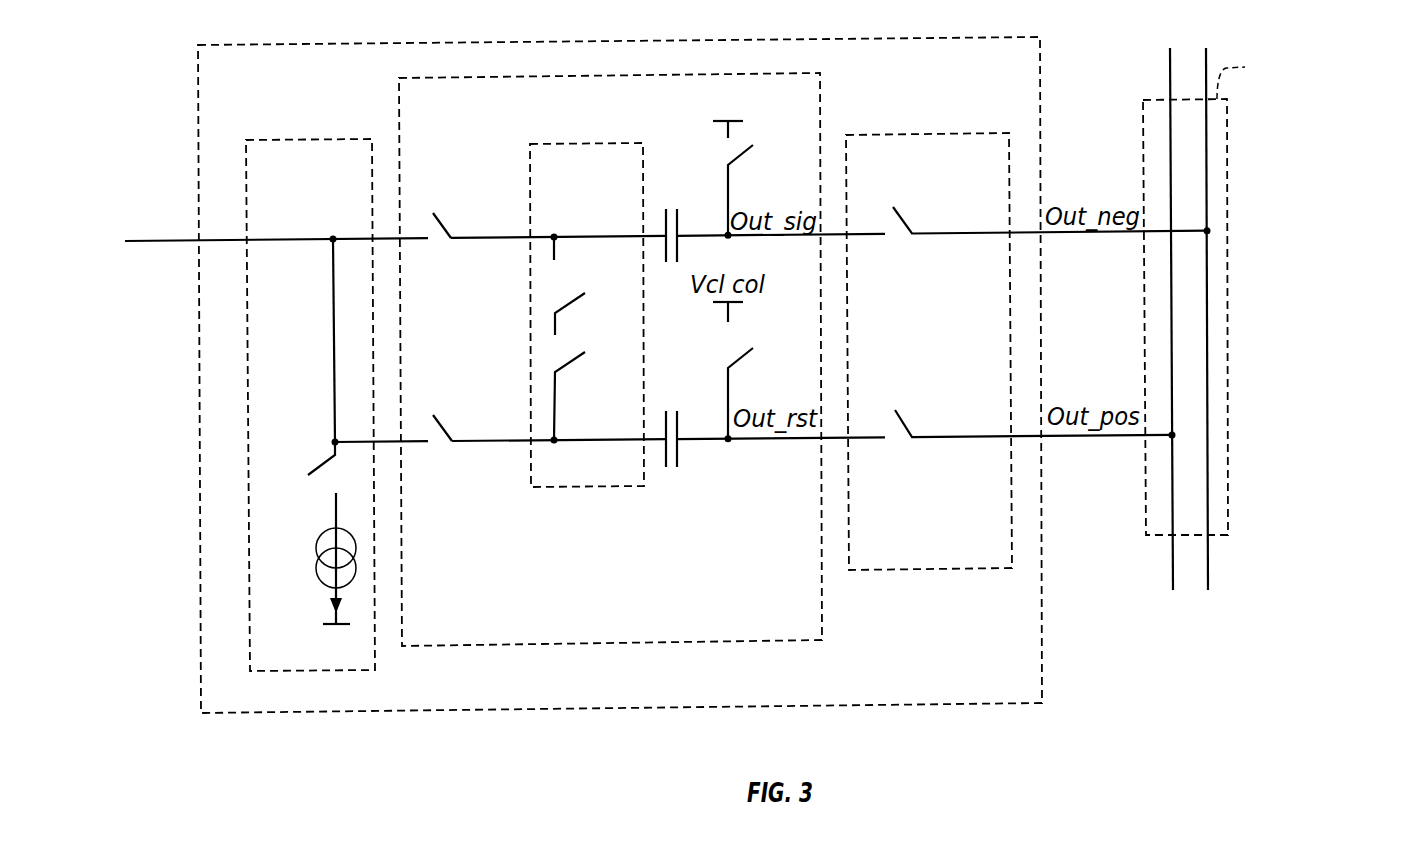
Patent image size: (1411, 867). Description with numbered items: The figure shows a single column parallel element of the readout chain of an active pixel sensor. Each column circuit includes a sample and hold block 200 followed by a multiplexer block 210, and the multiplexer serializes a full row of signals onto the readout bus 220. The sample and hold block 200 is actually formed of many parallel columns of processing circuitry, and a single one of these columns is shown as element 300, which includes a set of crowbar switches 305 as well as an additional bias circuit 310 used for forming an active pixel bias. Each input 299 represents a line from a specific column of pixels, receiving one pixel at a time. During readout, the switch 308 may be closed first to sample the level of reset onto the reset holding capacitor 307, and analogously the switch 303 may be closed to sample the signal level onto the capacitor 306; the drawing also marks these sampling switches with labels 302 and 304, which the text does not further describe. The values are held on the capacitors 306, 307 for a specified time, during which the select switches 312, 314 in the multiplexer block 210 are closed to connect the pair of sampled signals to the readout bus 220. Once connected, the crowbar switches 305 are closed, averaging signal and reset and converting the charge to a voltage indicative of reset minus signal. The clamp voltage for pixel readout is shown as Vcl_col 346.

The sample and hold block 200 is at (743, 642).
The multiplexer block 210 is at (942, 561).
The readout bus 220 is at (1228, 333).
The input 299 is at (157, 241).
The column of the sample and hold block 300 is at (463, 630).
The sample signal switch Sh_sig 302 is at (490, 240).
The switch 303 is at (433, 212).
The sample reset switch Sh_rst 304 is at (490, 443).
The crowbar switches 305 is at (608, 488).
The capacitor 306 is at (680, 247).
The reset holding capacitor 307 is at (680, 450).
The switch 308 is at (434, 415).
The bias circuit 310 is at (309, 139).
The switch 312 is at (900, 222).
The switch 314 is at (902, 426).
The clamp voltage Vcl_col 346 is at (763, 98).